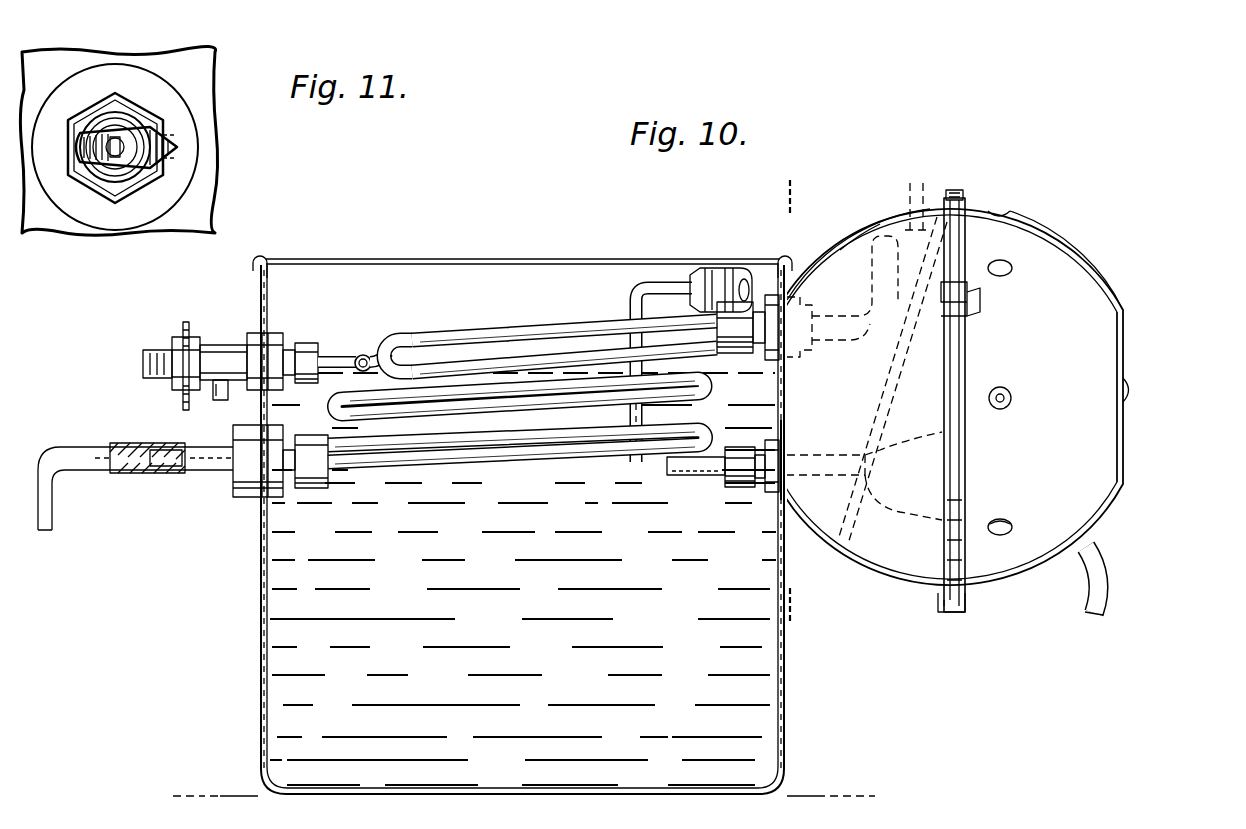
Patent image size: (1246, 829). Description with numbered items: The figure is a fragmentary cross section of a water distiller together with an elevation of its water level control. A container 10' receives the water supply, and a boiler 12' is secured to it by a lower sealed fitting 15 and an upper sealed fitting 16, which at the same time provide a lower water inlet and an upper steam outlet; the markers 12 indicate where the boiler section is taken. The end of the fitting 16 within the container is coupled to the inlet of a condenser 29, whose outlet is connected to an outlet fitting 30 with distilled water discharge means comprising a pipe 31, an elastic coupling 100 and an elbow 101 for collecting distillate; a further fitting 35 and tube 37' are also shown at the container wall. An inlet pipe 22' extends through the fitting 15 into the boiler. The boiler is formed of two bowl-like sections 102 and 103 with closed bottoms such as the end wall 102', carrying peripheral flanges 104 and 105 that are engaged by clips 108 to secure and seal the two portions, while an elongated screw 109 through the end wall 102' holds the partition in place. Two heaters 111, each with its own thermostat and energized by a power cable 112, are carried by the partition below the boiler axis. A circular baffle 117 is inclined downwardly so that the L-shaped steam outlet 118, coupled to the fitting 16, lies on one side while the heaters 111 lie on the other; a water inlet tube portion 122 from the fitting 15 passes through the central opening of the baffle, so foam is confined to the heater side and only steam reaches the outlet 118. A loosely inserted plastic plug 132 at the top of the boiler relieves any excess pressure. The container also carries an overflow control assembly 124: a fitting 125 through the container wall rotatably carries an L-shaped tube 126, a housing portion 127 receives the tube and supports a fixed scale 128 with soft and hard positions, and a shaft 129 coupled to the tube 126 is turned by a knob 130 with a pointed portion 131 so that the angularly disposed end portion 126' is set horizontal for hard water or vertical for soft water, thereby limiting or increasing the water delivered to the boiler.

In FIG. 10, the container 10' is at (558, 527).
In FIG. 10, the section line 12 is at (783, 401).
In FIG. 10, the boiler 12' is at (1066, 231).
In FIG. 10, the lower sealed fitting 15 is at (748, 506).
In FIG. 10, the upper sealed fitting 16 is at (827, 312).
In FIG. 10, the inlet pipe 22' is at (710, 482).
In FIG. 10, the condenser 29 is at (464, 474).
In FIG. 10, the outlet fitting 30 is at (281, 502).
In FIG. 10, the pipe 31 is at (178, 450).
In FIG. 10, the element mounting nut 35 is at (698, 266).
In FIG. 10, the inlet dip tube 37' is at (634, 369).
In FIG. 10, the elastic coupling 100 is at (134, 475).
In FIG. 10, the elbow 101 is at (44, 505).
In FIG. 10, the boiler section 102 is at (939, 387).
In FIG. 10, the closed bottom portion 102' is at (1154, 397).
In FIG. 10, the boiler section 103 is at (868, 228).
In FIG. 10, the peripheral flange 104 is at (967, 200).
In FIG. 10, the peripheral flange 105 is at (947, 202).
In FIG. 10, the clips 108 is at (962, 322).
In FIG. 10, the elongated screw 109 is at (1130, 392).
In FIG. 10, the heaters 111 is at (896, 432).
In FIG. 10, the power cable 112 is at (1102, 568).
In FIG. 10, the baffle 117 is at (882, 366).
In FIG. 10, the L-shaped steam outlet 118 is at (872, 220).
In FIG. 10, the water inlet tube portion 122 is at (846, 448).
In FIG. 11, the overflow control assembly 124 is at (183, 87).
In FIG. 10, the overflow control assembly 124 is at (228, 320).
In FIG. 10, the fitting 125 is at (290, 333).
In FIG. 10, the L-shaped tube 126 is at (353, 323).
In FIG. 10, the angularly disposed end portion 126' is at (412, 323).
In FIG. 10, the housing portion 127 is at (207, 345).
In FIG. 11, the fixed scale 128 is at (175, 188).
In FIG. 10, the fixed scale 128 is at (183, 330).
In FIG. 10, the shaft 129 is at (158, 378).
In FIG. 11, the knob 130 is at (83, 163).
In FIG. 10, the knob 130 is at (143, 362).
In FIG. 11, the pointed portion 131 is at (168, 130).
In FIG. 10, the plug 132 is at (908, 228).